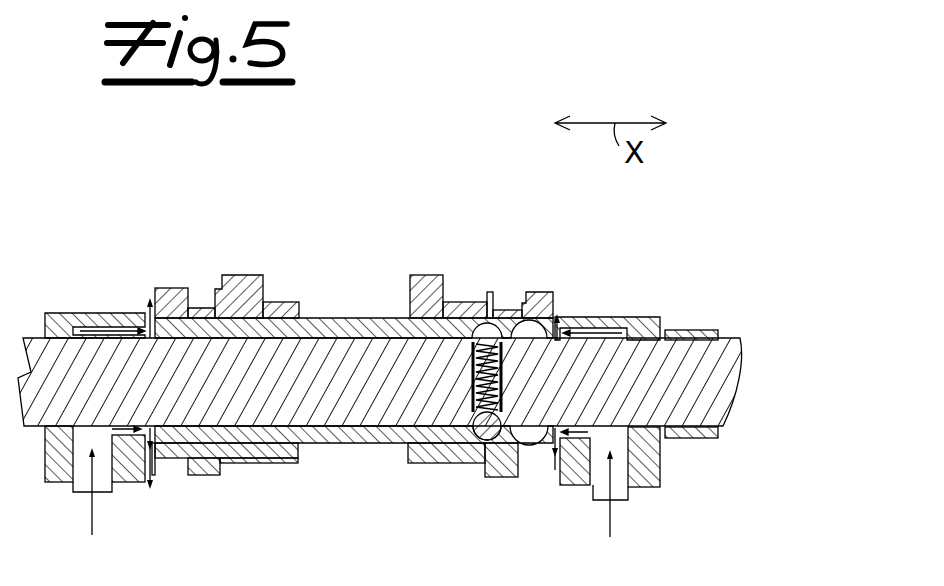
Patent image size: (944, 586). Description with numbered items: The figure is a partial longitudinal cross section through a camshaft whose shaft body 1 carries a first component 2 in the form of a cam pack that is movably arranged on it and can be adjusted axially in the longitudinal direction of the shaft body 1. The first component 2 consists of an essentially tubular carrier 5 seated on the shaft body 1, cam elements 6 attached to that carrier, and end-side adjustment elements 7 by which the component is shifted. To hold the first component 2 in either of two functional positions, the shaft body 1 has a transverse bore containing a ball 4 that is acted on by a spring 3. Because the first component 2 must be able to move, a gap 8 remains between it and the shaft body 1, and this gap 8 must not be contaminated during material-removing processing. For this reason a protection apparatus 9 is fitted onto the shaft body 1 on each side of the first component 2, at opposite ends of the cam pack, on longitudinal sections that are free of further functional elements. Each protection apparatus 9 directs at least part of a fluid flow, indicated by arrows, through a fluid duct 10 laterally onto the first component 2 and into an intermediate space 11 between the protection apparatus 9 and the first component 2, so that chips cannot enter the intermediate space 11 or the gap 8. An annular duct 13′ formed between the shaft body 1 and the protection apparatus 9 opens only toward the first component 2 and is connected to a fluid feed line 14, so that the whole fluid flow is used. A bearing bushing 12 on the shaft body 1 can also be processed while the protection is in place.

The shaft body 1 is at (722, 395).
The first component 2 is at (356, 268).
The spring 3 is at (450, 430).
The ball 4 is at (478, 440).
The tubular carrier 5 is at (347, 444).
The cam elements 6 is at (240, 290).
The adjustment elements 7 is at (173, 290).
The gap 8 is at (205, 450).
The protection apparatus 9 is at (89, 262).
The fluid duct 10 is at (133, 455).
The intermediate space 11 is at (149, 303).
The bearing bushing 12 is at (703, 438).
The annular duct 13′ is at (117, 313).
The fluid feed line 14 is at (63, 492).